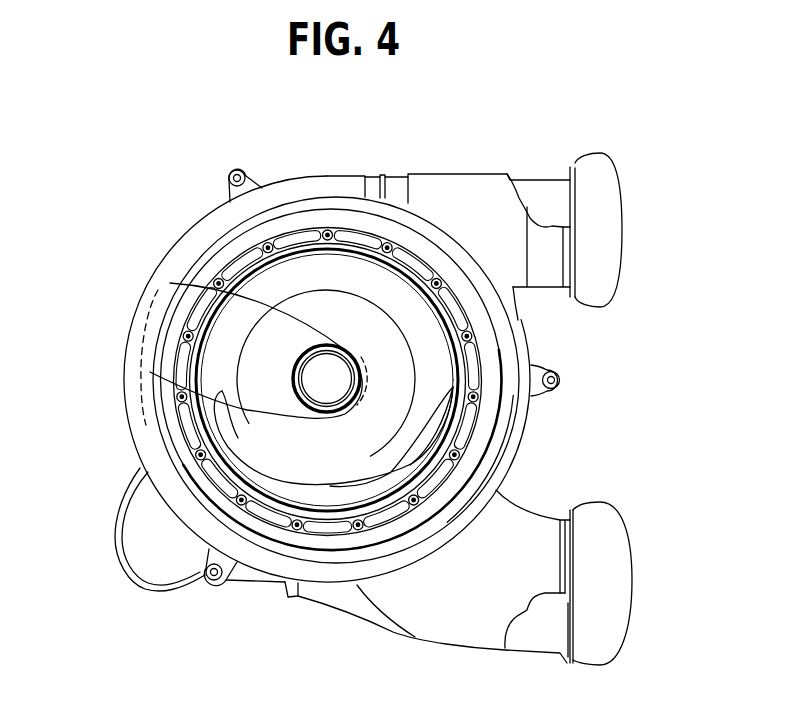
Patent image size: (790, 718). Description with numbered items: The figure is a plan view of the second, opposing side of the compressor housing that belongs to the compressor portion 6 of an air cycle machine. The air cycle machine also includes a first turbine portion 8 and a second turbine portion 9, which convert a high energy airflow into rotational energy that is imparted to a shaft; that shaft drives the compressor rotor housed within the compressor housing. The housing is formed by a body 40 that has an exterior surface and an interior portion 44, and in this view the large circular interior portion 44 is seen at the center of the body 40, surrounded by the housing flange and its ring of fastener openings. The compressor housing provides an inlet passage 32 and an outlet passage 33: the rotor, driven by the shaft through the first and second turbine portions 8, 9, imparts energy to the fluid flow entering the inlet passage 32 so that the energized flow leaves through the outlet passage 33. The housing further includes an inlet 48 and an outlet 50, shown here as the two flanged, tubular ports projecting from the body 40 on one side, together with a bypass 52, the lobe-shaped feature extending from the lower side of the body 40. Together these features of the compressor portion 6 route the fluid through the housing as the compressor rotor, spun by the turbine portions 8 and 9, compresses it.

The compressor portion 6 is at (173, 138).
The first turbine portion 8 is at (146, 309).
The second turbine portion 9 is at (238, 409).
The inlet passage 32 is at (340, 592).
The outlet passage 33 is at (328, 192).
The body 40 is at (128, 419).
The interior portion 44 is at (304, 380).
The inlet 48 is at (652, 577).
The outlet 50 is at (652, 233).
The bypass 52 is at (118, 560).